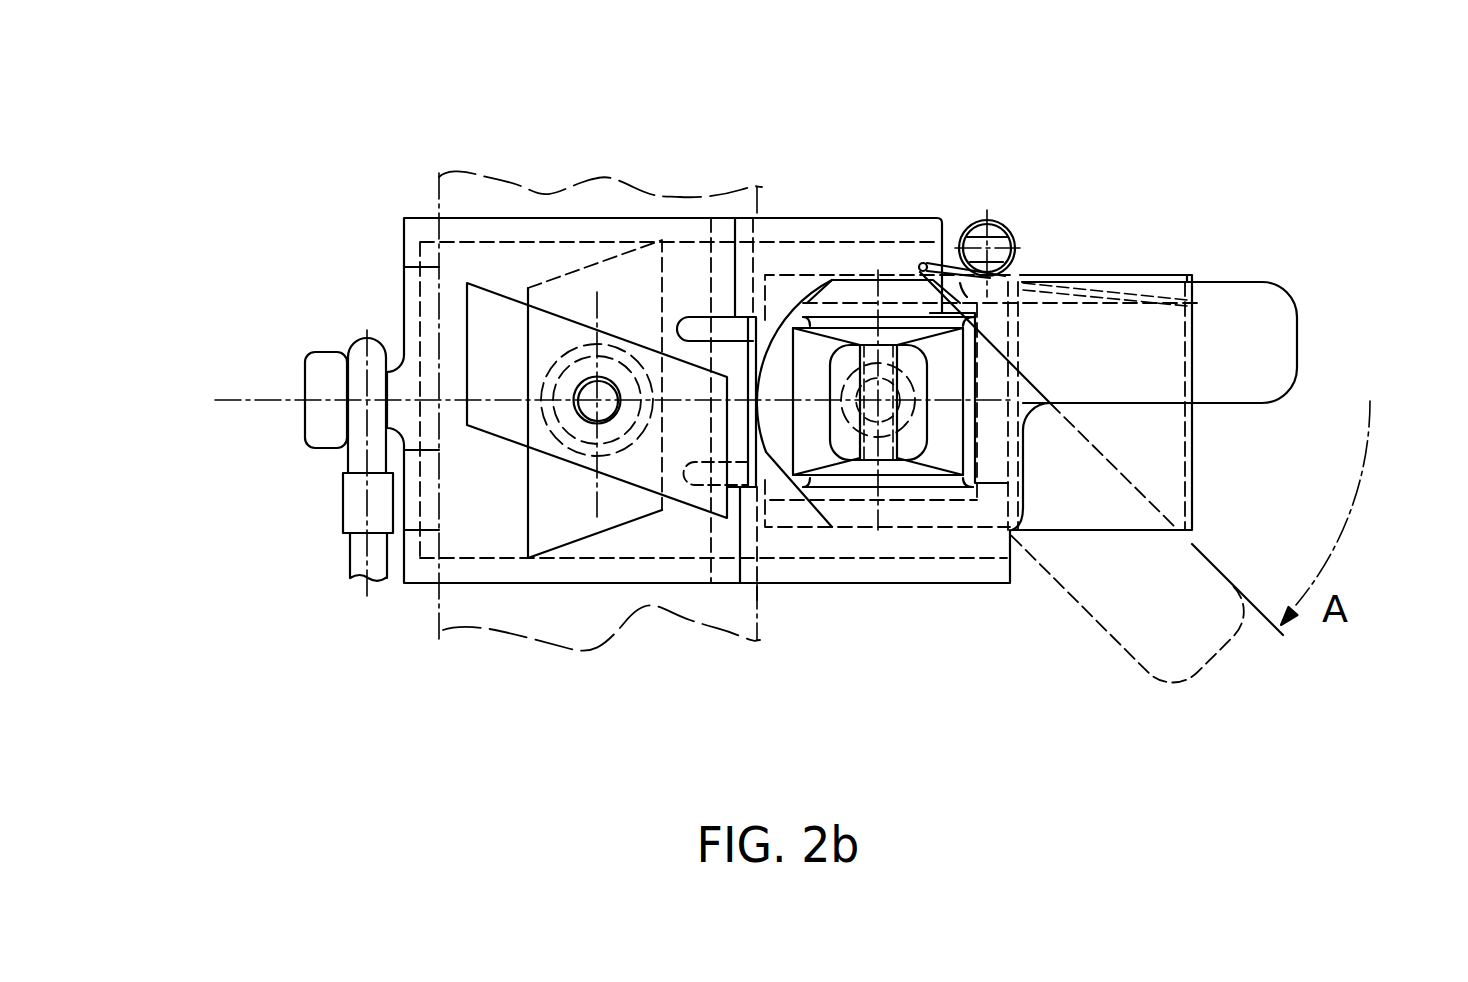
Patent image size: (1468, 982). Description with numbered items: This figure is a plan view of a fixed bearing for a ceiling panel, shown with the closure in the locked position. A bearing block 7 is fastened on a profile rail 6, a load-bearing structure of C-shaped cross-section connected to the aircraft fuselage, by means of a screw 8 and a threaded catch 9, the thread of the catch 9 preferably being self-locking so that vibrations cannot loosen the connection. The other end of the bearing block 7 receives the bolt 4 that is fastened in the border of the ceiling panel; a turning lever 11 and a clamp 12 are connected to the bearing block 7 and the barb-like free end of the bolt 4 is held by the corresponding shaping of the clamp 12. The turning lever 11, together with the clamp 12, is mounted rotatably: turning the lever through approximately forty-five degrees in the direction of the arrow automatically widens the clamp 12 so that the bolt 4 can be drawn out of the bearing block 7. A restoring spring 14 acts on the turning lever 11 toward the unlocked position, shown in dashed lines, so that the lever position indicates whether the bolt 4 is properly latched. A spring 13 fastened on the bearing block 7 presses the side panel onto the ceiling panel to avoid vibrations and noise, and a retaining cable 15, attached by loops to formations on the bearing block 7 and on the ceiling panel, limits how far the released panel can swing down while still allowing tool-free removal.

The bolt 4 is at (882, 375).
The profile rail 6 is at (587, 198).
The bearing block 7 is at (812, 572).
The screw 8 is at (587, 398).
The threaded catch 9 is at (495, 318).
The turning lever 11 is at (1258, 340).
The clamp 12 is at (818, 347).
The spring 13 is at (1157, 453).
The restoring spring 14 is at (1015, 253).
The retaining cable 15 is at (361, 556).